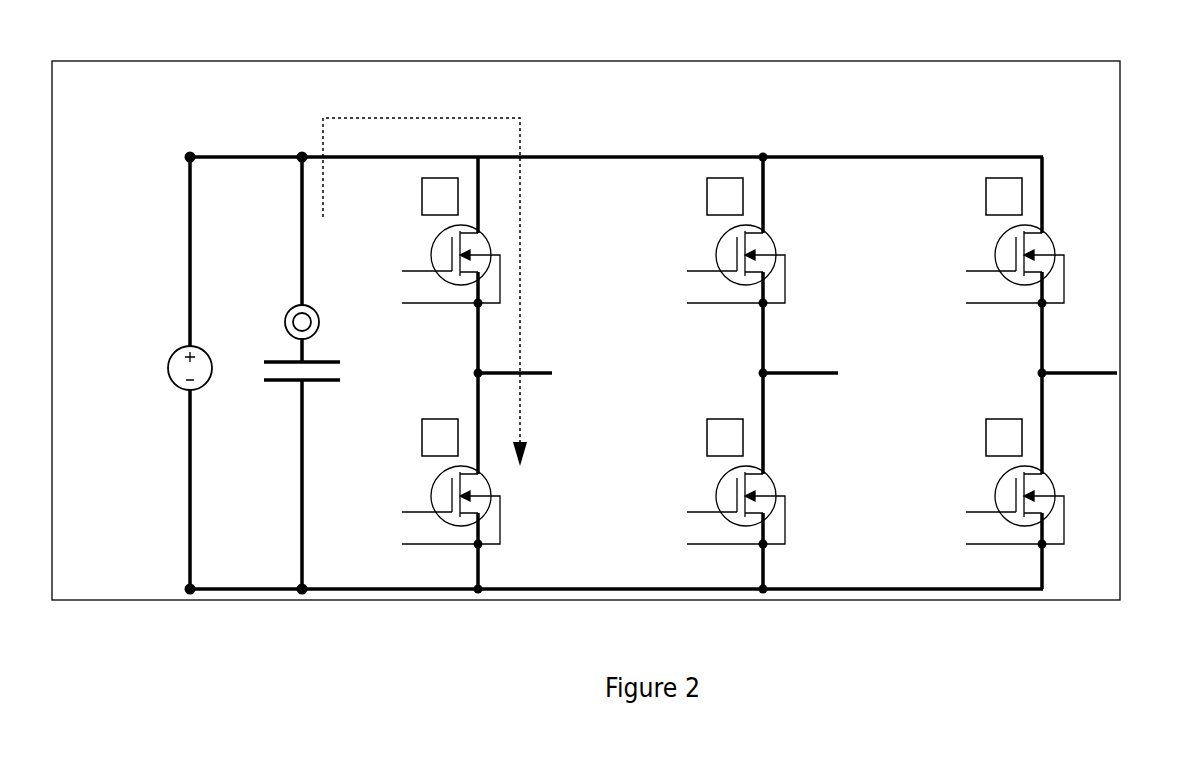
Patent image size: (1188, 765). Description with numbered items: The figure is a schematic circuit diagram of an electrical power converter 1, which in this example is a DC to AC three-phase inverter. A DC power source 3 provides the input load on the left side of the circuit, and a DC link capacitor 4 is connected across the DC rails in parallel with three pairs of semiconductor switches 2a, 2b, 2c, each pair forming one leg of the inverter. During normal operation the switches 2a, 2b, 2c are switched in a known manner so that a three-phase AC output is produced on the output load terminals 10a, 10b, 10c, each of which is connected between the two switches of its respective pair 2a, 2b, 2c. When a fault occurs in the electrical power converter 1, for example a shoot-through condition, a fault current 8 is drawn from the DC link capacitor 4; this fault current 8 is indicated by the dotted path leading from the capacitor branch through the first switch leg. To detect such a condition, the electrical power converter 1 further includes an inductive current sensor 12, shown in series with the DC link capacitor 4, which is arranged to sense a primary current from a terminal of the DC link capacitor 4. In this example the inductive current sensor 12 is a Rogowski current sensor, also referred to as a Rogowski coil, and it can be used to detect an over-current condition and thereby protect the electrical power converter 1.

The electrical power converter 1 is at (902, 103).
The pair of semiconductor switches 2a is at (438, 318).
The pair of semiconductor switches 2b is at (726, 318).
The pair of semiconductor switches 2c is at (997, 322).
The DC power source 3 is at (176, 350).
The DC link capacitor 4 is at (287, 383).
The fault current 8 is at (410, 117).
The output load terminal 10a is at (530, 370).
The output load terminal 10b is at (820, 365).
The output load terminal 10c is at (1100, 368).
The inductive current sensor 12 is at (290, 308).